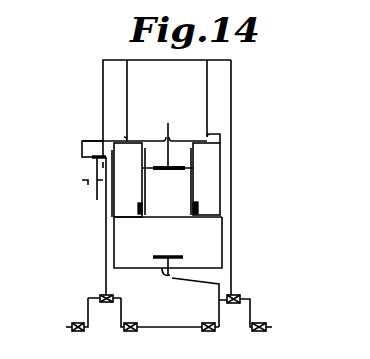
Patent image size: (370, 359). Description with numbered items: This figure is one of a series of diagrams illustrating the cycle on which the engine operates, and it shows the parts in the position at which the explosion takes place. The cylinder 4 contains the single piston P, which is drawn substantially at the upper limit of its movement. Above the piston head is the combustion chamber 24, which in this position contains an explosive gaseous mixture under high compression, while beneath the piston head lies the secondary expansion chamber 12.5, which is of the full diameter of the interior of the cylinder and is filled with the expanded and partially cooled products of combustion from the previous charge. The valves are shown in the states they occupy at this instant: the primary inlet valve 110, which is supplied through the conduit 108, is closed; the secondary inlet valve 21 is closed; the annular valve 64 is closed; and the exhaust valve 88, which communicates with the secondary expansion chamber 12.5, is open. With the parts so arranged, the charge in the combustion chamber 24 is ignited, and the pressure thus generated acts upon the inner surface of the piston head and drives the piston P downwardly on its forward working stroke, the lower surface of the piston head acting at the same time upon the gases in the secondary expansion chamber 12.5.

The supply pipe 108 is at (100, 141).
The primary inlet valve 110 is at (82, 149).
The secondary inlet valve 21 is at (172, 165).
The combustion chamber 24 is at (175, 197).
The piston P is at (205, 182).
The annular valve 64 is at (198, 207).
The cylinder 4 is at (233, 229).
The secondary expansion chamber 12.5 is at (205, 253).
The exhaust valve 88 is at (163, 256).